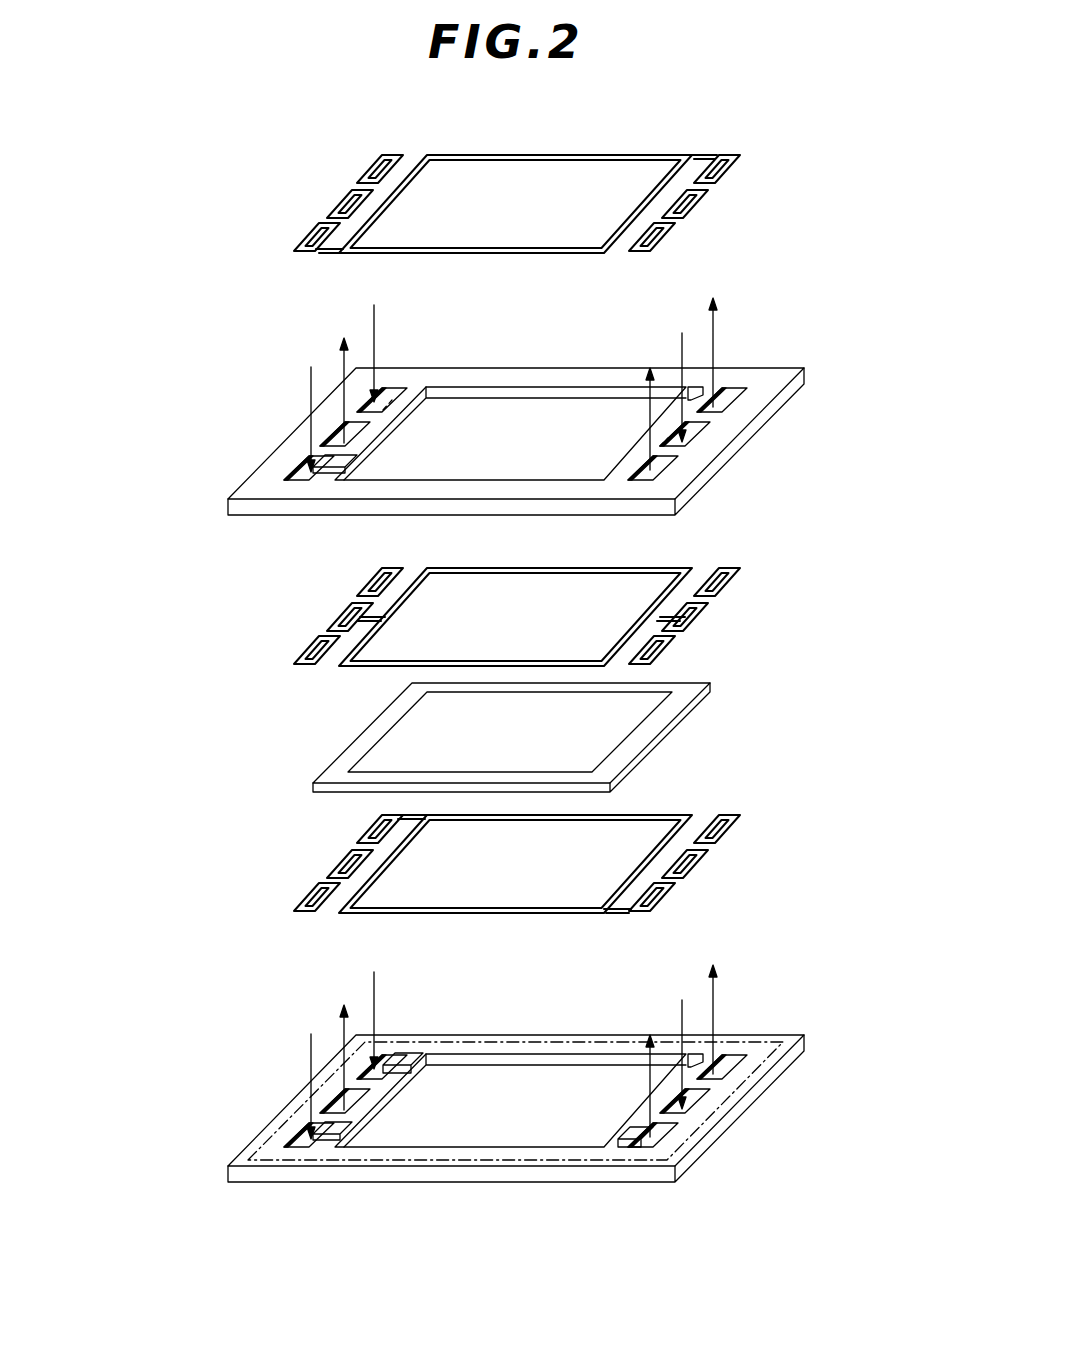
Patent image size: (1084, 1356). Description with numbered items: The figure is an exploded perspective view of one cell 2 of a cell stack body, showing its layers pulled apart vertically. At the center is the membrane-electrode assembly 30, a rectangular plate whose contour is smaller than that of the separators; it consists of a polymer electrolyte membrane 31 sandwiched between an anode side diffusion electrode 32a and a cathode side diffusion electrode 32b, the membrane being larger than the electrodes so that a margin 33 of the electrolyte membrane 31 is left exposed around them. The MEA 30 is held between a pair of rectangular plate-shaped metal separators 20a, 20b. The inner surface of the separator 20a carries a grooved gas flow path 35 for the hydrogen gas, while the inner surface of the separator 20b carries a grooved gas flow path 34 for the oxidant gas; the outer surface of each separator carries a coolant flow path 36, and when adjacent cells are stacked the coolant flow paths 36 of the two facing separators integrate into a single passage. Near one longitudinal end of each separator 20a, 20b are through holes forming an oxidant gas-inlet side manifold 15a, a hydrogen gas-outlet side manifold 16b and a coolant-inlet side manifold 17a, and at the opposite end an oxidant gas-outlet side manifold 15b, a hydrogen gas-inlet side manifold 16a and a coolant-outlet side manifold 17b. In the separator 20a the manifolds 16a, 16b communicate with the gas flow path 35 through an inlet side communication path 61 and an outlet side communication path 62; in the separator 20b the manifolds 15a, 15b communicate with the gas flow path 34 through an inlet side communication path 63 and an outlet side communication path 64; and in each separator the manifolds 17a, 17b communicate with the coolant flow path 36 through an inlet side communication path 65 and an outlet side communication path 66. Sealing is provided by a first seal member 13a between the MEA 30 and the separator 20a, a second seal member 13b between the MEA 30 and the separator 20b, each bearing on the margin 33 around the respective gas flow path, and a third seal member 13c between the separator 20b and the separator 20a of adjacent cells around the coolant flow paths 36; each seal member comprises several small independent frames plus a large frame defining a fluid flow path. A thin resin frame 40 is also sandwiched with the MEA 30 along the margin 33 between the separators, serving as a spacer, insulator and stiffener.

The cell 2 is at (877, 351).
The first seal member 13a is at (309, 866).
The second seal member 13b is at (302, 603).
The third seal member 13c is at (310, 163).
The oxidant gas-inlet side manifold 15a is at (330, 444).
The oxidant gas-outlet side manifold 15b is at (705, 443).
The hydrogen gas-inlet side manifold 16a is at (663, 477).
The hydrogen gas-outlet side manifold 16b is at (368, 410).
The coolant-inlet side manifold 17a is at (298, 472).
The coolant-outlet side manifold 17b is at (752, 403).
The separator 20a is at (444, 1104).
The separator 20b is at (230, 504).
The membrane-electrode assembly 30 is at (446, 751).
The electrolyte membrane 31 is at (323, 767).
The anode side diffusion electrode 32a is at (348, 793).
The cathode side diffusion electrode 32b is at (377, 742).
The margin 33 is at (663, 713).
The gas flow path for the oxidant gas 34 is at (357, 517).
The gas flow path for the hydrogen gas 35 is at (507, 1117).
The coolant flow path 36 is at (545, 417).
The resin frame 40 is at (400, 1160).
The inlet side communication path 61 is at (620, 1142).
The outlet side communication path 62 is at (397, 1065).
The inlet side communication path 63 is at (378, 430).
The outlet side communication path 64 is at (673, 457).
The inlet side communication path 65 is at (333, 472).
The outlet side communication path 66 is at (698, 406).